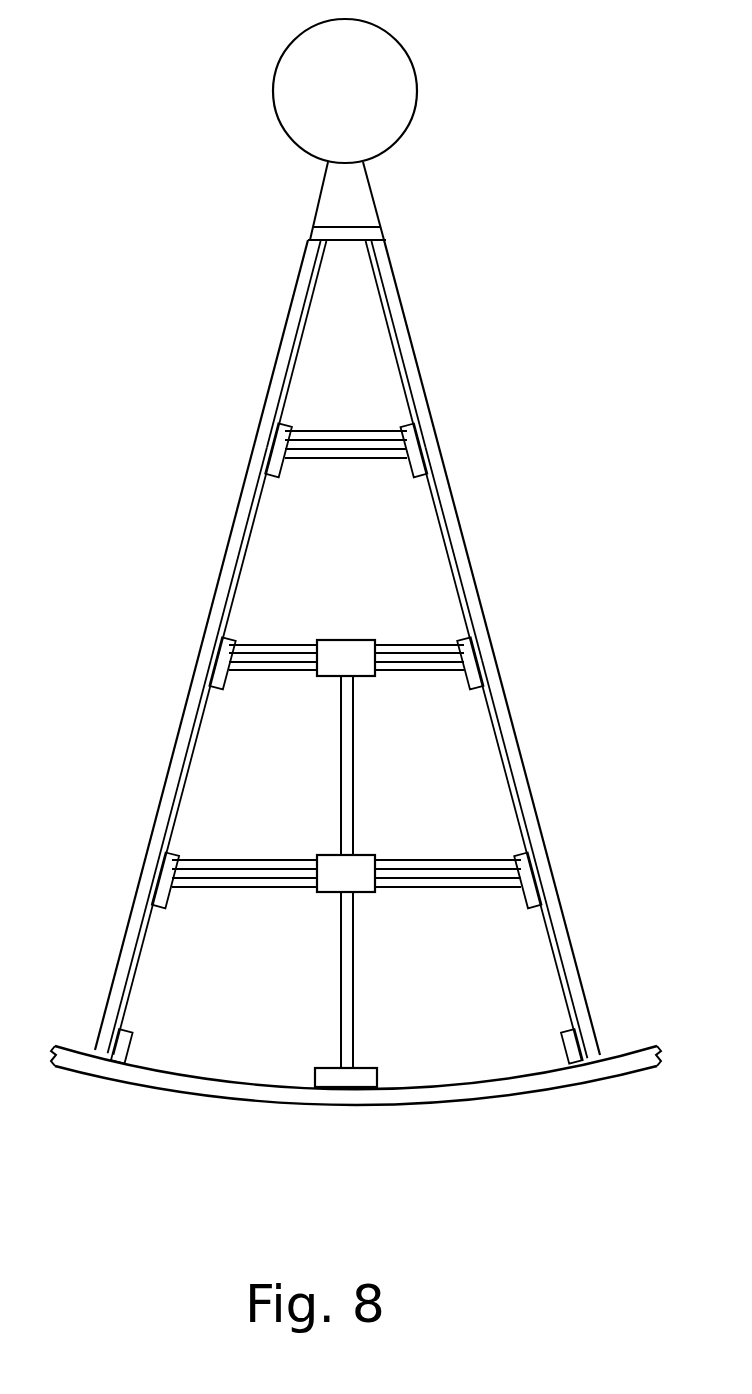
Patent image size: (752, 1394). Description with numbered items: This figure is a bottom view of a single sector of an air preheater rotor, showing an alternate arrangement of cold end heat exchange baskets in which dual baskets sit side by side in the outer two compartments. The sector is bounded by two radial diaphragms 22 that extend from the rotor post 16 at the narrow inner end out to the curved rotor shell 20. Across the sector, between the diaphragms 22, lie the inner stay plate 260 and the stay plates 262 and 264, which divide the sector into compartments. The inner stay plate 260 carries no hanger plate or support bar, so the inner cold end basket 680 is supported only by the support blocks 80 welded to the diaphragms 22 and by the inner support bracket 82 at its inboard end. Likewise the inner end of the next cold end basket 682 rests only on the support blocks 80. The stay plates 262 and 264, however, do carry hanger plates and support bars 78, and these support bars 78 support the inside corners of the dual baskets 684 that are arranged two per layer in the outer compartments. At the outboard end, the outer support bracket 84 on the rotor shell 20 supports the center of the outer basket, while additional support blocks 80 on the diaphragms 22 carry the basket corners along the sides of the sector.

The rotor post 16 is at (358, 110).
The inner support bracket 82 is at (367, 232).
The radial diaphragm 22 is at (177, 770).
The inner cold end basket 680 is at (378, 350).
The cold end basket 682 is at (433, 523).
The dual baskets 684 is at (500, 772).
The support block 80 is at (423, 452).
The inner stay plate 260 is at (314, 445).
The stay plate 262 is at (387, 660).
The stay plate 264 is at (402, 873).
The support bar 78 is at (353, 655).
The outer support bracket 84 is at (362, 1078).
The rotor shell 20 is at (445, 1095).